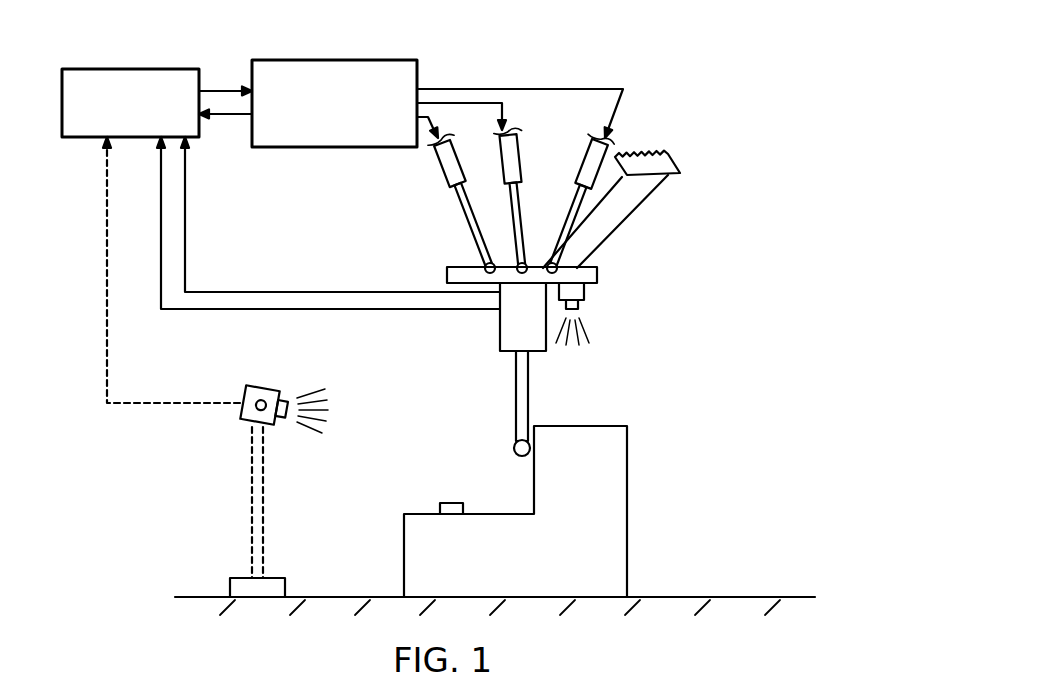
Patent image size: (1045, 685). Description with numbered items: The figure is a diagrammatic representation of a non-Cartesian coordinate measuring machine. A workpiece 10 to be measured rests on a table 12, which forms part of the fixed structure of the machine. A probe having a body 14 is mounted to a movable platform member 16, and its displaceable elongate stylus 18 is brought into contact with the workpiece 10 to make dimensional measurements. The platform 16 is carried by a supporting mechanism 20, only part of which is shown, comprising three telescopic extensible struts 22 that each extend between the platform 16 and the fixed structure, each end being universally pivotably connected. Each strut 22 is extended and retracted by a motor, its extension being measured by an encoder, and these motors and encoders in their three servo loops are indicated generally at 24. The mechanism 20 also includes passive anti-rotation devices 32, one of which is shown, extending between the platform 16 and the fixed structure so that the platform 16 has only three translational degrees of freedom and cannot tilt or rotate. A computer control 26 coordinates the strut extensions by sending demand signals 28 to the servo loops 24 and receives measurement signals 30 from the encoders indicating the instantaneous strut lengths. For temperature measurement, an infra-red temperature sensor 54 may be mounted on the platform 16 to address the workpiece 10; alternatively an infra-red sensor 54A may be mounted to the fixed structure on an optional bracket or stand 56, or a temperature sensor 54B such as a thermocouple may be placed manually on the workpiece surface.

The workpiece 10 is at (627, 533).
The table 12 is at (692, 597).
The probe body 14 is at (500, 332).
The movable platform member 16 is at (455, 266).
The stylus 18 is at (528, 405).
The supporting mechanism 20 is at (704, 225).
The telescopic extensible struts 22 is at (442, 167).
The motor and encoder servo loops 24 is at (335, 148).
The computer control 26 is at (130, 69).
The demand signals 28 is at (212, 88).
The measurement signals 30 is at (240, 118).
The passive anti-rotation device 32 is at (658, 192).
The infra-red temperature sensor 54 is at (586, 290).
The infra-red sensor 54A is at (263, 386).
The temperature sensor 54B is at (452, 503).
The bracket or stand 56 is at (252, 497).